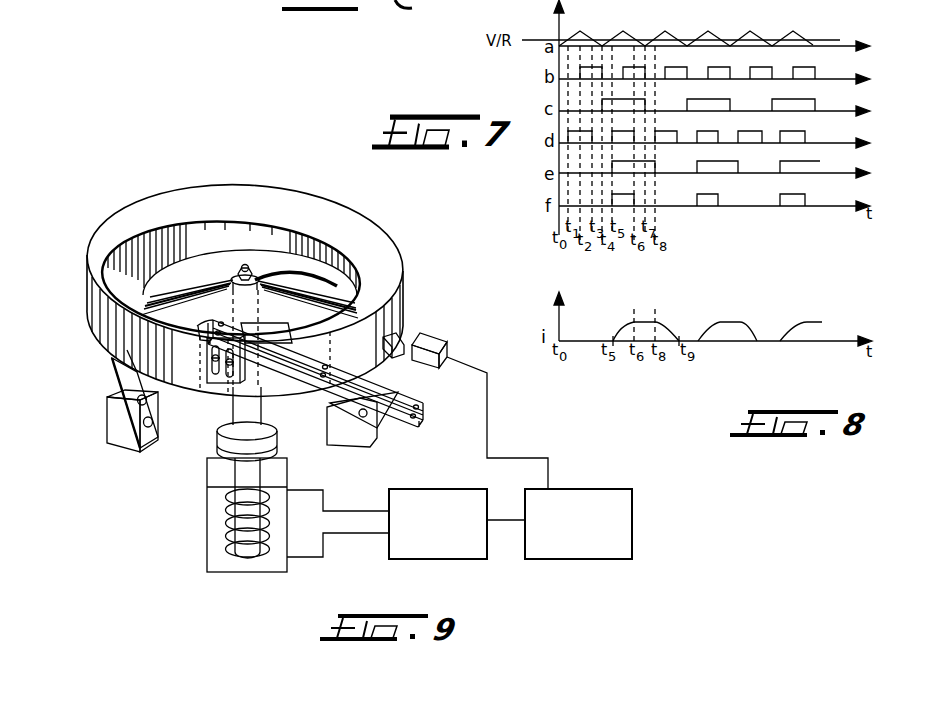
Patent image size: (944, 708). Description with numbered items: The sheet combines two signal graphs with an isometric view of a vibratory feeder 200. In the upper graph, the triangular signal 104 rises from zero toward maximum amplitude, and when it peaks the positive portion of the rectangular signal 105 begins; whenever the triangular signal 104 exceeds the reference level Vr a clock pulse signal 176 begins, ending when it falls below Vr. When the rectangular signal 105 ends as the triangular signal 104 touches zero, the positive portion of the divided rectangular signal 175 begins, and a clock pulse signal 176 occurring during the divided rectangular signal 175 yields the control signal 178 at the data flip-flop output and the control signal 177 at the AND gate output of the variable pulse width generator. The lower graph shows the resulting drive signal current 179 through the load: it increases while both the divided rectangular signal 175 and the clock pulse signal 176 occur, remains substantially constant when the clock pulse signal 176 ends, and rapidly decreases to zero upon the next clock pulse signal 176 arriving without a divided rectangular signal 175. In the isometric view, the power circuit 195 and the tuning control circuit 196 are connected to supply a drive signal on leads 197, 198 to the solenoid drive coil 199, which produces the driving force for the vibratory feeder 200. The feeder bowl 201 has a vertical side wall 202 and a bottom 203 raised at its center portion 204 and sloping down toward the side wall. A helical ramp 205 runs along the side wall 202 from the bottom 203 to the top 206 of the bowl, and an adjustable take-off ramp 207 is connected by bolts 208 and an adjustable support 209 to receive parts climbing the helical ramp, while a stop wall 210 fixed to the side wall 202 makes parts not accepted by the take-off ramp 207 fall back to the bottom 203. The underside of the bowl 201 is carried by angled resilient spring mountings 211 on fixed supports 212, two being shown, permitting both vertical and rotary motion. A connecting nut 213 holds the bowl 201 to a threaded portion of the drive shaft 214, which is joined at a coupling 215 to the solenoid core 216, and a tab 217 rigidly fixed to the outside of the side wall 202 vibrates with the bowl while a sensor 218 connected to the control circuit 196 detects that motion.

In FIG. 7, the triangular signal 104 is at (583, 33).
In FIG. 7, the rectangular signal 105 is at (583, 66).
In FIG. 7, the divided rectangular signal 175 is at (625, 97).
In FIG. 7, the clock pulse signal 176 is at (568, 132).
In FIG. 7, the control signal 177 is at (622, 192).
In FIG. 7, the control signal 178 is at (627, 160).
In FIG. 8, the drive signal current 179 is at (641, 322).
In FIG. 9, the power circuit 195 is at (447, 560).
In FIG. 9, the tuning control circuit 196 is at (595, 560).
In FIG. 9, the lead 197 is at (350, 511).
In FIG. 9, the lead 198 is at (357, 534).
In FIG. 9, the solenoid drive coil 199 is at (272, 564).
In FIG. 9, the vibratory feeder 200 is at (297, 369).
In FIG. 9, the vibratory feeder bowl 201 is at (285, 189).
In FIG. 9, the side wall 202 is at (337, 211).
In FIG. 9, the bottom 203 is at (177, 270).
In FIG. 9, the center portion 204 is at (270, 270).
In FIG. 9, the helical ramp 205 is at (200, 222).
In FIG. 9, the top 206 is at (195, 326).
In FIG. 9, the adjustable take-off ramp 207 is at (394, 396).
In FIG. 9, the bolts 208 is at (211, 366).
In FIG. 9, the adjustable support 209 is at (222, 382).
In FIG. 9, the stop wall 210 is at (270, 330).
In FIG. 9, the angled resilient spring mountings 211 is at (118, 378).
In FIG. 9, the fixed supports 212 is at (113, 427).
In FIG. 9, the connecting nut 213 is at (248, 267).
In FIG. 9, the drive shaft 214 is at (261, 408).
In FIG. 9, the coupling 215 is at (277, 437).
In FIG. 9, the solenoid core 216 is at (257, 474).
In FIG. 9, the tab 217 is at (400, 342).
In FIG. 9, the sensor 218 is at (438, 338).